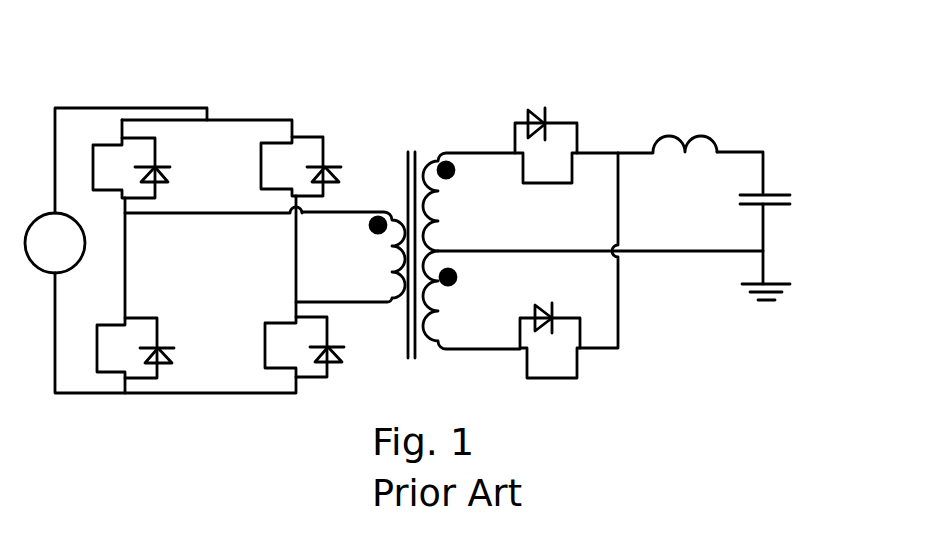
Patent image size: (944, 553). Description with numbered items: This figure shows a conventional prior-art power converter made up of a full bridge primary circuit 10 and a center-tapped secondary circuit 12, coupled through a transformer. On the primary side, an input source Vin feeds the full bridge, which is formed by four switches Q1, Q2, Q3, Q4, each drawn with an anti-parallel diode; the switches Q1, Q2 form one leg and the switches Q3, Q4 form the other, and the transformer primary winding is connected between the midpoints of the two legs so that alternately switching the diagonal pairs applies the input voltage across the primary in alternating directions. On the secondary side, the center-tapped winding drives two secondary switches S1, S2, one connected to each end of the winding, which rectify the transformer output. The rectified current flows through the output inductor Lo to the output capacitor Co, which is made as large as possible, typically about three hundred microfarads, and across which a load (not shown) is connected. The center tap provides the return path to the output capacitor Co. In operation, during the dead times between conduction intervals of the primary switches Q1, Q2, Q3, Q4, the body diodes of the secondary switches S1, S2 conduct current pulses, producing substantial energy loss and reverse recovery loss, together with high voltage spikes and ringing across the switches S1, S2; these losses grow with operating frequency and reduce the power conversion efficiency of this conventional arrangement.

The full bridge primary circuit 10 is at (266, 90).
The center-tapped secondary circuit 12 is at (484, 91).
The input voltage source Vin is at (55, 243).
The switch Q1 is at (131, 168).
The switch Q2 is at (135, 348).
The switch Q3 is at (301, 166).
The switch Q4 is at (304, 347).
The secondary switch S1 is at (546, 145).
The secondary switch S2 is at (550, 340).
The output inductor Lo is at (668, 136).
The output capacitor Co is at (778, 195).